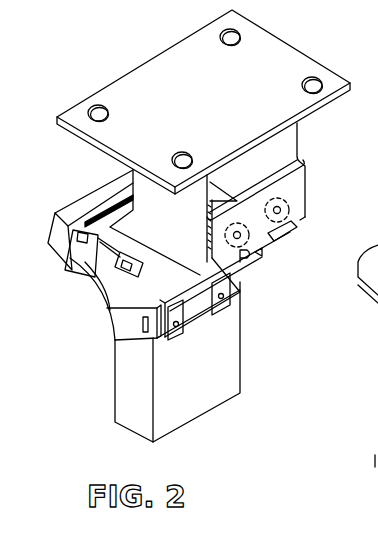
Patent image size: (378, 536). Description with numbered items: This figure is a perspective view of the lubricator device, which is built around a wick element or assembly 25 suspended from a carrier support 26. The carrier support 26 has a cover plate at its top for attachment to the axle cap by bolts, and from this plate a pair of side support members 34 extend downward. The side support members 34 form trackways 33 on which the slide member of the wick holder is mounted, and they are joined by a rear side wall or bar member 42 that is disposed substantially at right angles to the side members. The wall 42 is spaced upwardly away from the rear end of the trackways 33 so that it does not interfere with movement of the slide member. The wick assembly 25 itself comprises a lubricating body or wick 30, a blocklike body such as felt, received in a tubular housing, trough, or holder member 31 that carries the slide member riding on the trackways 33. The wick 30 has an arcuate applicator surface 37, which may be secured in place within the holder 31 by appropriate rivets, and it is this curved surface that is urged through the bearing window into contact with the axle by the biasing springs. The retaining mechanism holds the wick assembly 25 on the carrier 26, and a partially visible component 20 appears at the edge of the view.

The mounting plate 20 is at (327, 128).
The side support members 34 is at (180, 210).
The carrier support 26 is at (307, 182).
The rear side wall or bar member 42 is at (260, 210).
The trackways 33 is at (290, 229).
The lubricating body or wick 30 is at (222, 367).
The wick element or assembly 25 is at (110, 355).
The tubular housing, trough, or holder member 31 is at (67, 275).
The arcuate applicator surface 37 is at (53, 241).